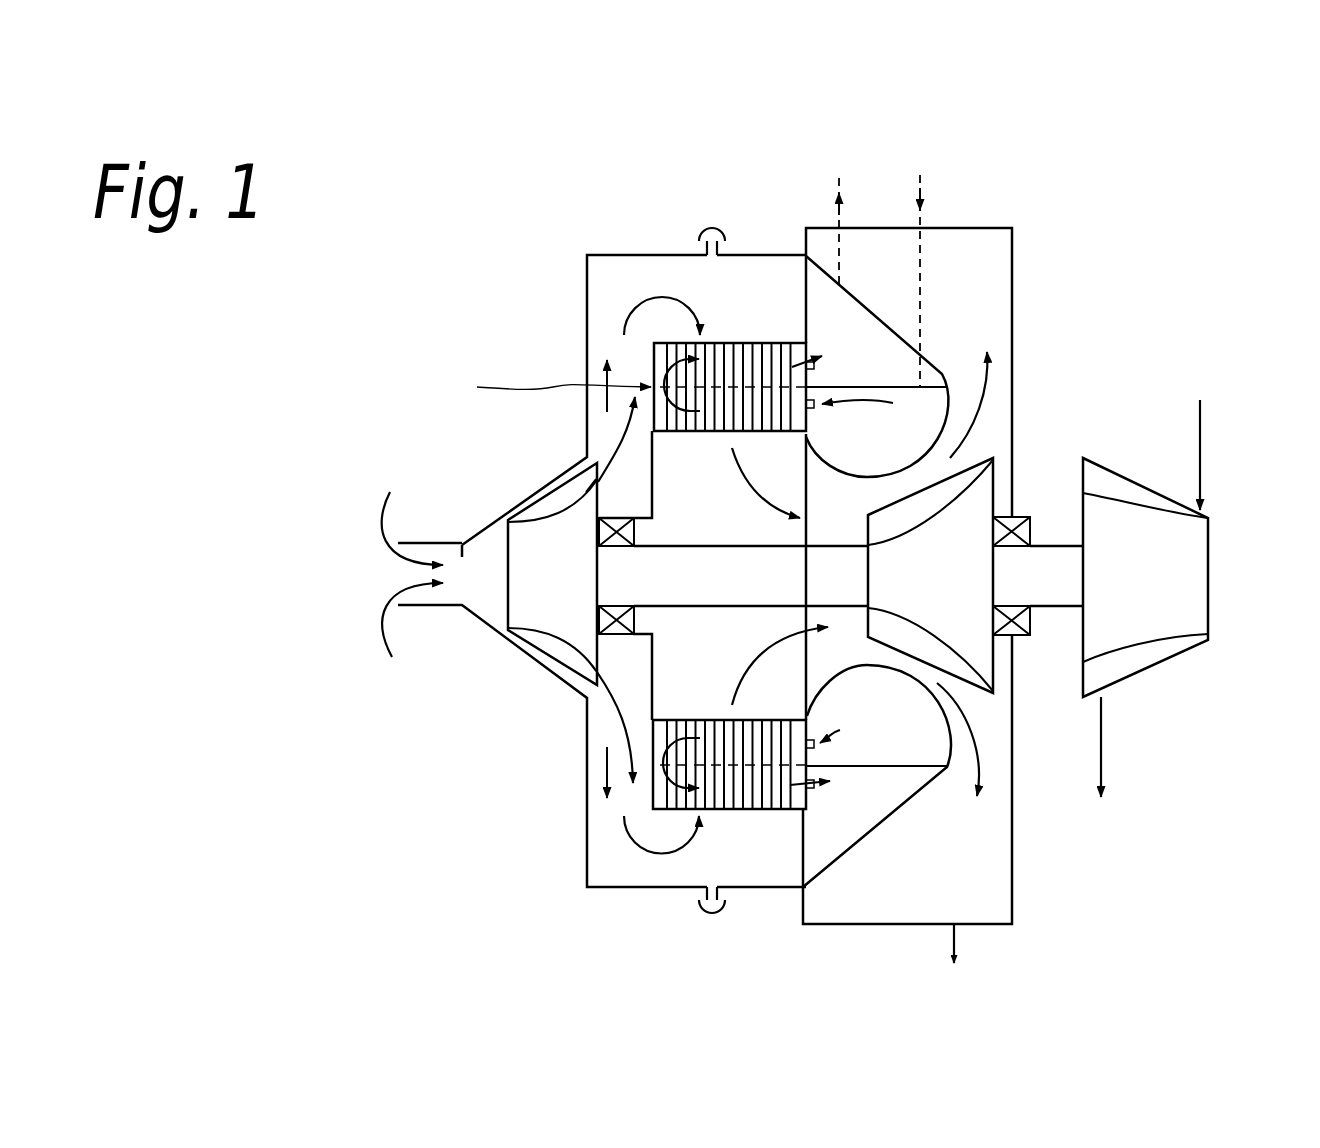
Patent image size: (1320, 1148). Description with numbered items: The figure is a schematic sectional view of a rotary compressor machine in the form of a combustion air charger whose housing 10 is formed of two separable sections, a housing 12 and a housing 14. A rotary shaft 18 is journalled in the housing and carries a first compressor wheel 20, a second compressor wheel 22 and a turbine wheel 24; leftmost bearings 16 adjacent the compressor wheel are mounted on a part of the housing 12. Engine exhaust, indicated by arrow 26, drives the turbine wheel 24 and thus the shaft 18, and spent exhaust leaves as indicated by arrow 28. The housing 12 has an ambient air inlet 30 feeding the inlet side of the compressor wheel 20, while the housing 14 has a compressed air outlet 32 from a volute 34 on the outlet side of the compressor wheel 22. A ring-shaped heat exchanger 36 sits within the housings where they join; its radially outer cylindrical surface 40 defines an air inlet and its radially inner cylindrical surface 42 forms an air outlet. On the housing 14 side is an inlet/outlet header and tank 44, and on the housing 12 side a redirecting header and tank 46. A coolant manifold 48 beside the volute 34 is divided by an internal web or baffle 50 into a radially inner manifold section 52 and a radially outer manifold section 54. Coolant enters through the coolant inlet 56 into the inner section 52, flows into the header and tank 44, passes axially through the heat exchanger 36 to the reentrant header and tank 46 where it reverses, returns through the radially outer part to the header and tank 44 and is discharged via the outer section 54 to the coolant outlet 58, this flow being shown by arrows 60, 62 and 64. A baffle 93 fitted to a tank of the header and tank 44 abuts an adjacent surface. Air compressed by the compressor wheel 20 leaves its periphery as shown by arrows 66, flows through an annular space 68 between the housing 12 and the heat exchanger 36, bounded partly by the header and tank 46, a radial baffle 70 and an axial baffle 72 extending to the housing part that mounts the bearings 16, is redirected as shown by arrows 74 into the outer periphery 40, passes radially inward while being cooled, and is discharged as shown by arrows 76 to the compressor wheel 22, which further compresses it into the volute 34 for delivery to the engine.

The housing 10 is at (525, 222).
The housing section 12 is at (586, 800).
The housing section 14 is at (847, 925).
The bearings 16 is at (1012, 518).
The rotary shaft 18 is at (746, 594).
The first compressor wheel 20 is at (557, 617).
The second compressor wheel 22 is at (977, 500).
The turbine wheel 24 is at (1205, 623).
The exhaust inlet arrow 26 is at (1205, 447).
The exhaust outlet arrow 28 is at (1105, 748).
The ambient air inlet 30 is at (460, 540).
The compressed air outlet 32 is at (954, 940).
The volute 34 is at (941, 892).
The heat exchanger 36 is at (730, 341).
The radially outer cylindrical surface 40 is at (672, 342).
The radially inner cylindrical surface 42 is at (735, 343).
The inlet/outlet header and tank 44 is at (820, 377).
The redirecting header and tank 46 is at (545, 386).
The coolant manifold 48 is at (939, 372).
The internal web or baffle 50 is at (916, 392).
The radially inner manifold section 52 is at (862, 465).
The radially outer manifold section 54 is at (851, 312).
The coolant inlet 56 is at (836, 190).
The coolant outlet 58 is at (928, 206).
The coolant flow arrow 60 is at (826, 413).
The coolant flow arrow 62 is at (676, 425).
The coolant flow arrow 64 is at (814, 355).
The compressed air discharge arrows 66 is at (627, 447).
The annular space 68 is at (604, 378).
The radial baffle 70 is at (655, 484).
The axial baffle 72 is at (652, 640).
The redirected air arrows 74 is at (637, 312).
The cooled air discharge arrows 76 is at (757, 665).
The baffle 93 is at (800, 783).